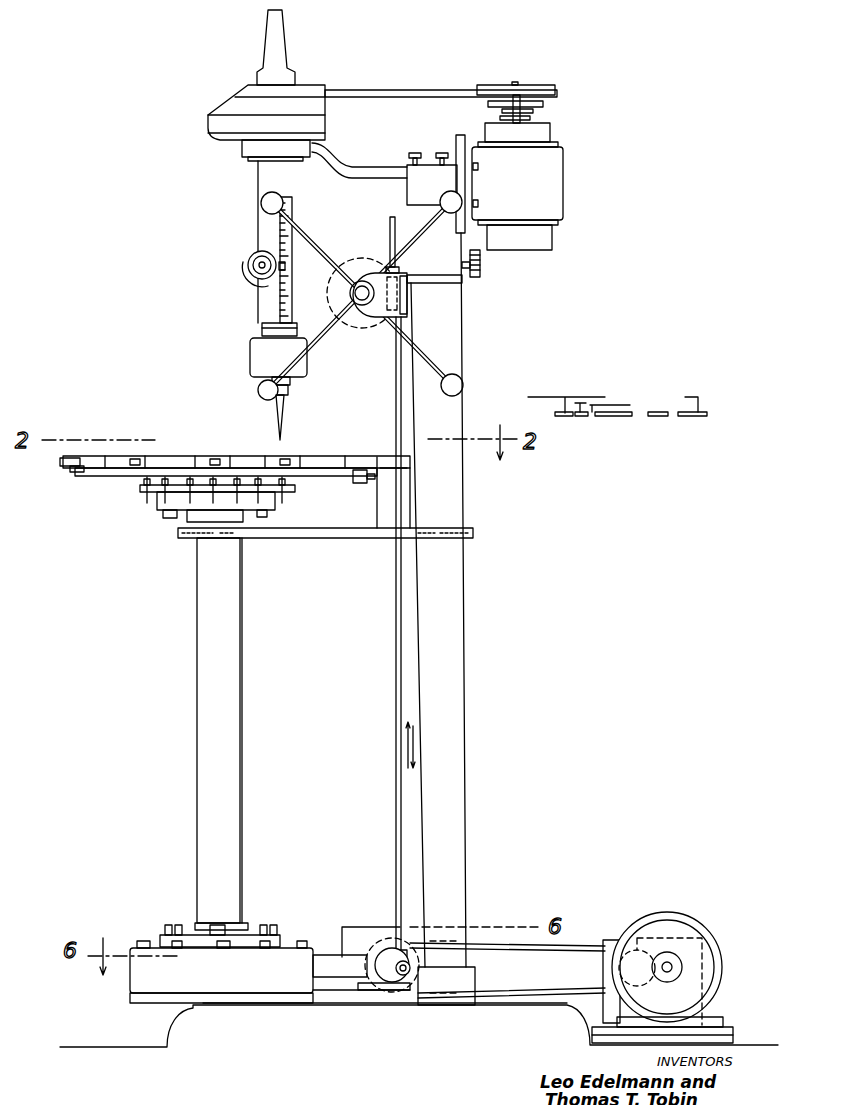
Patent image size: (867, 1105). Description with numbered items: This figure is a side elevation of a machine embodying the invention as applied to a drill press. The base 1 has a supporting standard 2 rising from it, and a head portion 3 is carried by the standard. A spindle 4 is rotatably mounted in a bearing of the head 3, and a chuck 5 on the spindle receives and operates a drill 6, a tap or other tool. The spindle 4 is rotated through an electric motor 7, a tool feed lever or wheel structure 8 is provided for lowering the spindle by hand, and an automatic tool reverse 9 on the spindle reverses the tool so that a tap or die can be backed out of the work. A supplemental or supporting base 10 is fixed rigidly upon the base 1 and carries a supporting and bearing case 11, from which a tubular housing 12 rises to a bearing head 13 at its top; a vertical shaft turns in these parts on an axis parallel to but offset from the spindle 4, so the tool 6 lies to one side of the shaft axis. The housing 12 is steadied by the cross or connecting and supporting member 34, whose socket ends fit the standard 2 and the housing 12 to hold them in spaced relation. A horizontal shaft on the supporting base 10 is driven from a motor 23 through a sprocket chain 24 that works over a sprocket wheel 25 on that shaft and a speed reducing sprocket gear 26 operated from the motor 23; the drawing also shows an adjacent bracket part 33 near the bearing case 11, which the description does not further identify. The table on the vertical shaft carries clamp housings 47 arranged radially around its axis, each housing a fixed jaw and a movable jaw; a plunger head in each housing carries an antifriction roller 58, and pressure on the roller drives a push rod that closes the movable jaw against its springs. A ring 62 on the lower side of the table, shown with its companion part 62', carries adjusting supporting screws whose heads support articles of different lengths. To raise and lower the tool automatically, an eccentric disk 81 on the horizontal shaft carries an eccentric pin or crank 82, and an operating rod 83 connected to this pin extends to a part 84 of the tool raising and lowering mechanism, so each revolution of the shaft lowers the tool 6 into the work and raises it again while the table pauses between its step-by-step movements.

The base 1 is at (285, 1040).
The supporting standard 2 is at (453, 677).
The head portion 3 is at (440, 262).
The spindle 4 is at (260, 327).
The chuck 5 is at (295, 393).
The drill 6 is at (285, 428).
The electric motor 7 is at (550, 178).
The tool feed lever or wheel structure 8 is at (367, 293).
The automatic tool reverse 9 is at (256, 362).
The supplemental or supporting base 10 is at (150, 1000).
The supporting and bearing case 11 is at (140, 980).
The tubular housing 12 is at (200, 706).
The bearing head 13 is at (158, 510).
The motor 23 is at (685, 933).
The sprocket chain 24 is at (572, 942).
The sprocket wheel 25 is at (382, 945).
The speed reducing sprocket gear 26 is at (655, 935).
The bracket 33 is at (333, 962).
The cross or connecting and supporting member 34 is at (340, 533).
The clamp housing 47 is at (160, 455).
The antifriction roller 58 is at (63, 470).
The ring 62 is at (193, 504).
The fixture clamp 62' is at (332, 498).
The eccentric disk 81 is at (395, 980).
The eccentric pin or crank 82 is at (410, 975).
The operating rod 83 is at (395, 620).
The part of the tool raising and lowering mechanism 84 is at (400, 313).